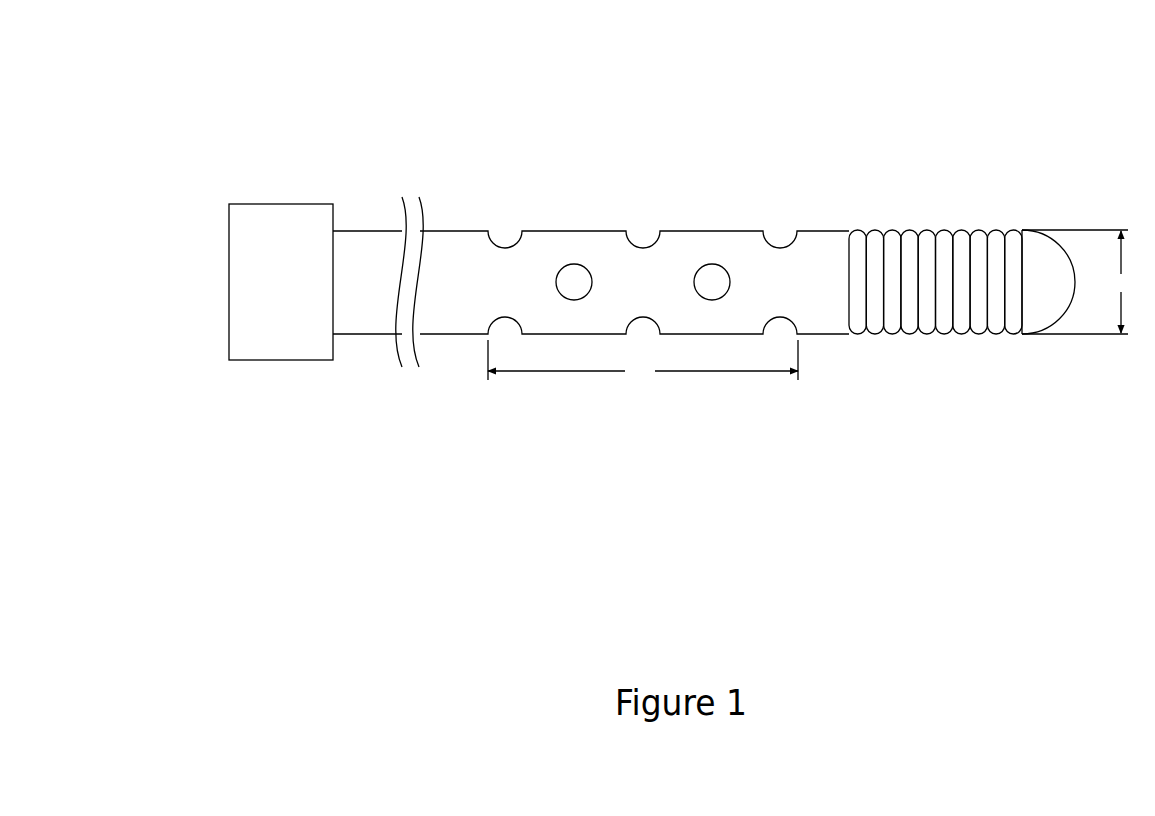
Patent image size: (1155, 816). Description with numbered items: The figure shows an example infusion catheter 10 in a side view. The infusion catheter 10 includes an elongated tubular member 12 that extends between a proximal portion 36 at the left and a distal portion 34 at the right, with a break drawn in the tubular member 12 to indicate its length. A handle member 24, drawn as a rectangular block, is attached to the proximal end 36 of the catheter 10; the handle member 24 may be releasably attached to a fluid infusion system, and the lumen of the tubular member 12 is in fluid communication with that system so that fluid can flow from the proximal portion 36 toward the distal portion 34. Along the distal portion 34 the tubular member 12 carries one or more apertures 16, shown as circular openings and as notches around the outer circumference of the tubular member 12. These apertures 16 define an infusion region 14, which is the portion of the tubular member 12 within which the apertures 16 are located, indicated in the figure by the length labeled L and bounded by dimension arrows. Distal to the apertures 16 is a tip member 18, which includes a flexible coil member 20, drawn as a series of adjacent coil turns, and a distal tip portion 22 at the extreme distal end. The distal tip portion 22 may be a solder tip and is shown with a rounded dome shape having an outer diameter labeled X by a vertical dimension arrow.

The infusion catheter 10 is at (808, 138).
The elongated tubular member 12 is at (457, 240).
The infusion region 14 is at (698, 208).
The apertures 16 is at (573, 280).
The tip member 18 is at (935, 323).
The flexible coil member 20 is at (928, 238).
The distal tip portion 22 is at (1043, 306).
The handle member 24 is at (280, 203).
The distal portion 34 is at (1035, 132).
The proximal portion 36 is at (207, 140).